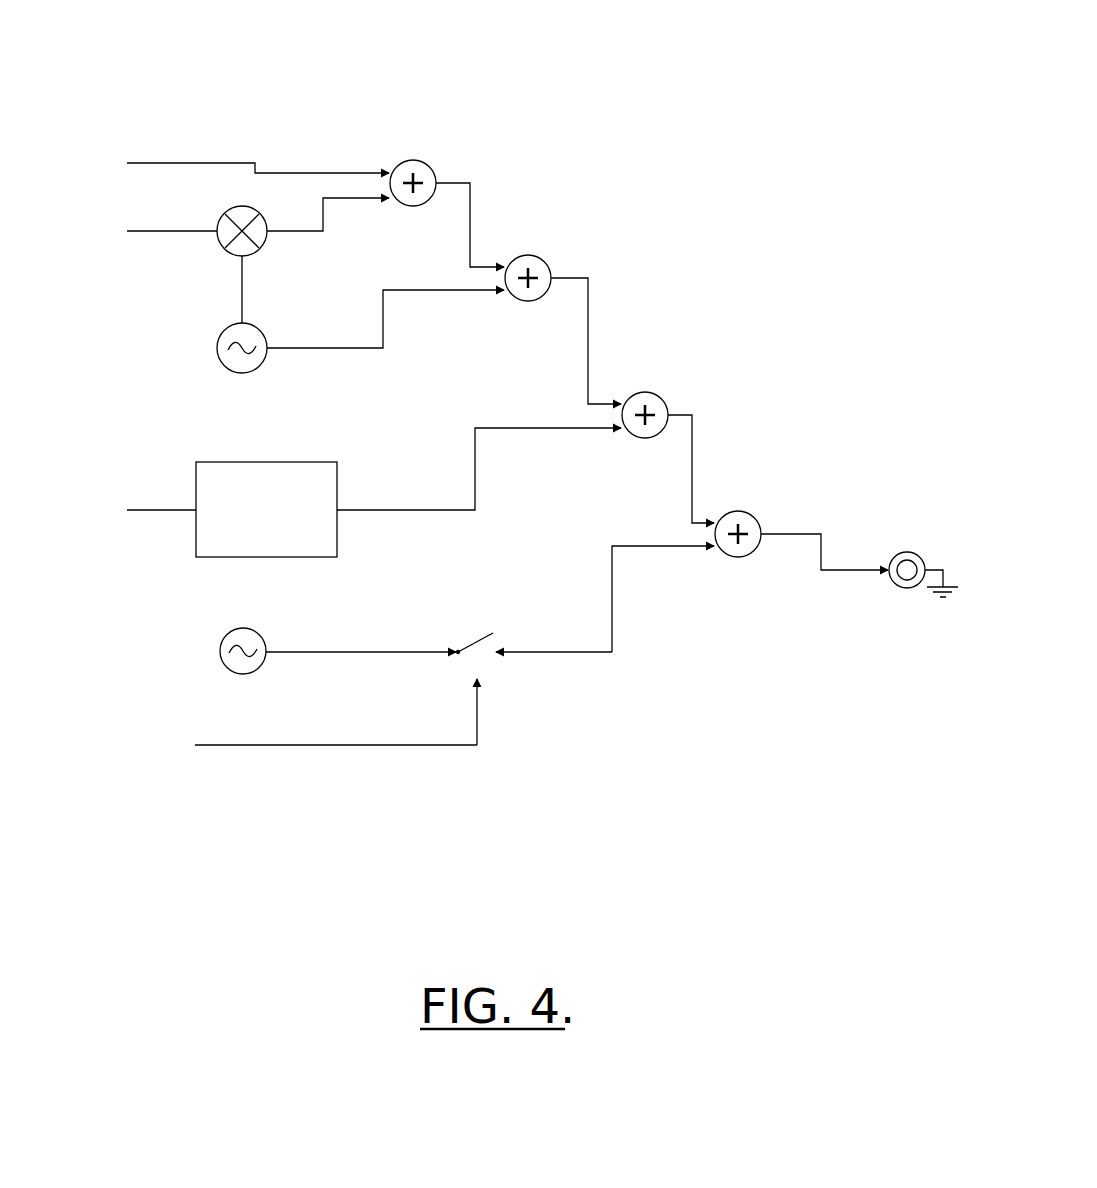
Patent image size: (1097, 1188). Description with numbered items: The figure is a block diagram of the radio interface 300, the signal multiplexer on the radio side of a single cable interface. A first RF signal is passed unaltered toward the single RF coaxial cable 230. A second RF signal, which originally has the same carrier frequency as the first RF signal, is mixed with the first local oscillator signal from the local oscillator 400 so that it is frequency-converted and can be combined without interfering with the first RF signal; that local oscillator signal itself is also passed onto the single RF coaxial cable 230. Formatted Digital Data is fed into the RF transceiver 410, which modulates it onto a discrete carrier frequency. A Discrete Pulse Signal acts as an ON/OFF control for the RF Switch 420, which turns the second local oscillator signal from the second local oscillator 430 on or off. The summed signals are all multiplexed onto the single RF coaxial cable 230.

The radio interface 300 is at (727, 97).
The local oscillator 400 is at (260, 328).
The RF transceiver 410 is at (299, 458).
The RF Switch 420 is at (499, 686).
The second local oscillator 430 is at (222, 645).
The single RF coaxial cable 230 is at (902, 574).